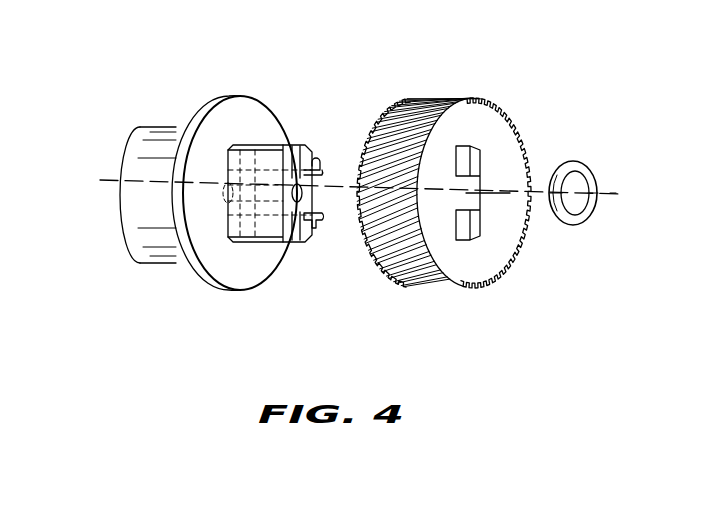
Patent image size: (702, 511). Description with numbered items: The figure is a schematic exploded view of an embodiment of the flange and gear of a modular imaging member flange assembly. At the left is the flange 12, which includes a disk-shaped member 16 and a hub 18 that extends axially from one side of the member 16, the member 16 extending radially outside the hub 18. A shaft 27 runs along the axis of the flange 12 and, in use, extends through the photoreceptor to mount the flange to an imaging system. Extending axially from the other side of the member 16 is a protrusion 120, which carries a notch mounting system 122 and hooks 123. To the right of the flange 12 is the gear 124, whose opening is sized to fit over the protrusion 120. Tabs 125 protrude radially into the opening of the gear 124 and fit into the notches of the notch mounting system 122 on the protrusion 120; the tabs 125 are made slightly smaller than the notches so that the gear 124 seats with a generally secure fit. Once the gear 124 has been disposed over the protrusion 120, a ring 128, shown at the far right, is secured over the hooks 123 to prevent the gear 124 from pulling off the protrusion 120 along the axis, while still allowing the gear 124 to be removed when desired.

The flange 12 is at (278, 31).
The member 16 is at (238, 118).
The hub 18 is at (166, 112).
The shaft 27 is at (342, 182).
The protrusion 120 is at (267, 240).
The notch mounting system 122 is at (302, 148).
The hooks 123 is at (322, 162).
The gear 124 is at (512, 136).
The tabs 125 is at (465, 148).
The ring 128 is at (586, 170).